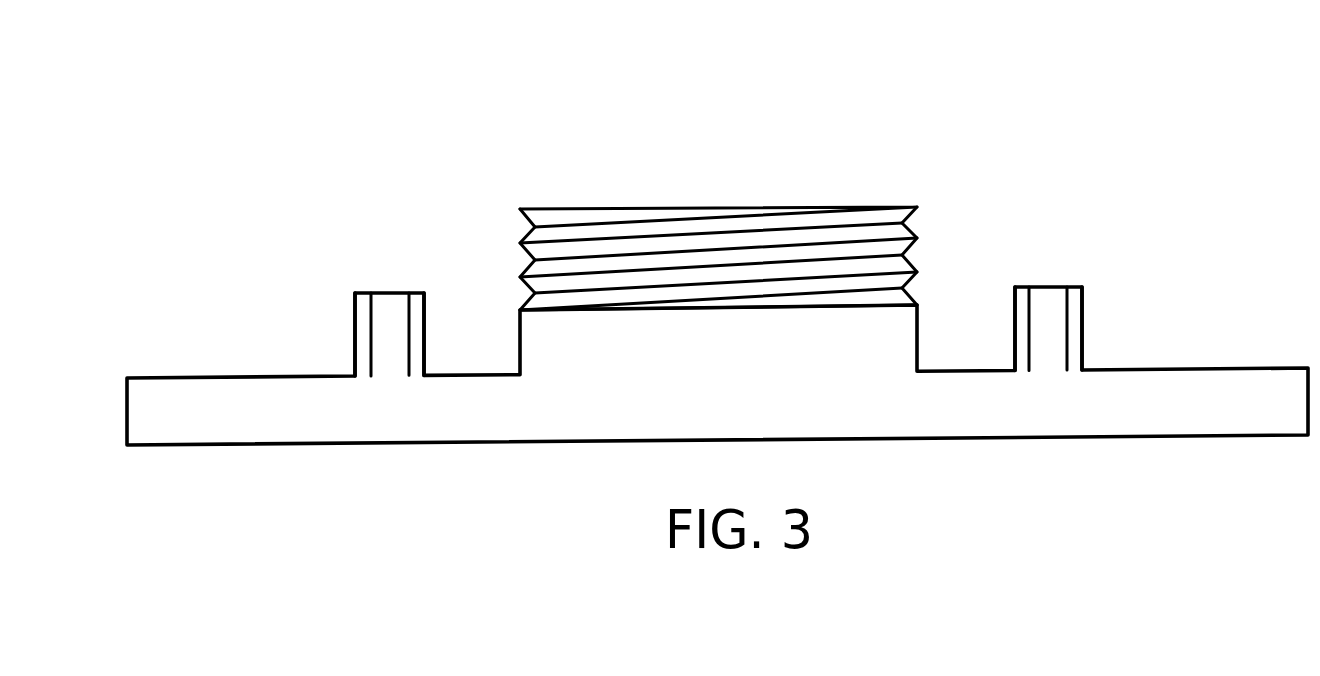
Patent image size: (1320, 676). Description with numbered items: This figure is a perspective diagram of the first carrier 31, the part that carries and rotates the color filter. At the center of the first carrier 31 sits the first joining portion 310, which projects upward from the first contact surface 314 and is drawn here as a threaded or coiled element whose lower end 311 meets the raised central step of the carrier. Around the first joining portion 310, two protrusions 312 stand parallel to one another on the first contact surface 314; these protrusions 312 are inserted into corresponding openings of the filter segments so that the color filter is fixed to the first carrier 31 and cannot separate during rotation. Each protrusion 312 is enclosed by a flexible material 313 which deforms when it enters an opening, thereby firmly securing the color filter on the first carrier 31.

The first carrier 31 is at (212, 80).
The first joining portion 310 is at (717, 208).
The coil end 311 is at (522, 238).
The protrusion 312 is at (388, 293).
The flexible material 313 is at (355, 318).
The first contact surface 314 is at (1213, 367).